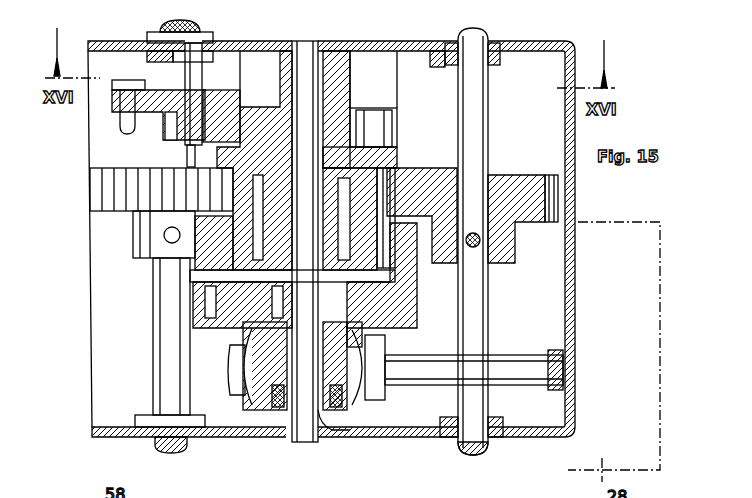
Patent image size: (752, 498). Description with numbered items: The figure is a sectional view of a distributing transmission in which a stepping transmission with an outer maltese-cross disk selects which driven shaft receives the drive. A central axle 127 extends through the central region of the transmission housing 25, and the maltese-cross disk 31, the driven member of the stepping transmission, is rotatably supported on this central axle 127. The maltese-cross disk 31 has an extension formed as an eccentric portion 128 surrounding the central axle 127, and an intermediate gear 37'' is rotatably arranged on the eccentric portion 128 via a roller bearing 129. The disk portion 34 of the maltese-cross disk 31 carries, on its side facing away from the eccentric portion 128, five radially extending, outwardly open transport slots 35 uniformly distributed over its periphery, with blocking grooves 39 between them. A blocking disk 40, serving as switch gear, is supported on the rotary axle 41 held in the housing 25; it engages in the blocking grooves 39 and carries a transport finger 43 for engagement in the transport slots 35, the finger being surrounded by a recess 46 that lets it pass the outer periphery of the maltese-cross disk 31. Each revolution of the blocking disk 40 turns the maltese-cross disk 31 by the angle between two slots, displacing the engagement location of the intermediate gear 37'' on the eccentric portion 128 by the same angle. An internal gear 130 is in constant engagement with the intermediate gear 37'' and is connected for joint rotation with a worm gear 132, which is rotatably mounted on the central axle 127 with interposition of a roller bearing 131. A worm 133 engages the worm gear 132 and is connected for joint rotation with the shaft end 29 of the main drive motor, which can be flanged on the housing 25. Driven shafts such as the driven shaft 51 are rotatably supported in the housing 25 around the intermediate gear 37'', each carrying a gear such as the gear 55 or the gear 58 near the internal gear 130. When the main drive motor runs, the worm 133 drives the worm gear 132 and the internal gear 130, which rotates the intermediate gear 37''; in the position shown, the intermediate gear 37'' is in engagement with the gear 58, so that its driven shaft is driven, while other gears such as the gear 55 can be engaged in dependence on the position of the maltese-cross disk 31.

The transmission housing 25 is at (338, 50).
The shaft end 29 is at (525, 370).
The maltese-cross disk 31 is at (355, 125).
The disk portion 34 is at (387, 158).
The transport slots 35 is at (378, 118).
The intermediate gear 37'' is at (121, 234).
The blocking grooves 39 is at (256, 112).
The blocking disk 40 is at (218, 97).
The rotary axle 41 is at (190, 78).
The transport finger 43 is at (127, 118).
The recess 46 is at (167, 127).
The driven shaft 51 is at (475, 437).
The gear 55 is at (527, 196).
The gear 58 is at (120, 190).
The central axle 127 is at (295, 438).
The eccentric portion 128 is at (207, 277).
The roller bearing 129 is at (338, 238).
The internal gear 130 is at (207, 243).
The roller bearing 131 is at (318, 425).
The worm gear 132 is at (262, 398).
The worm 133 is at (228, 385).